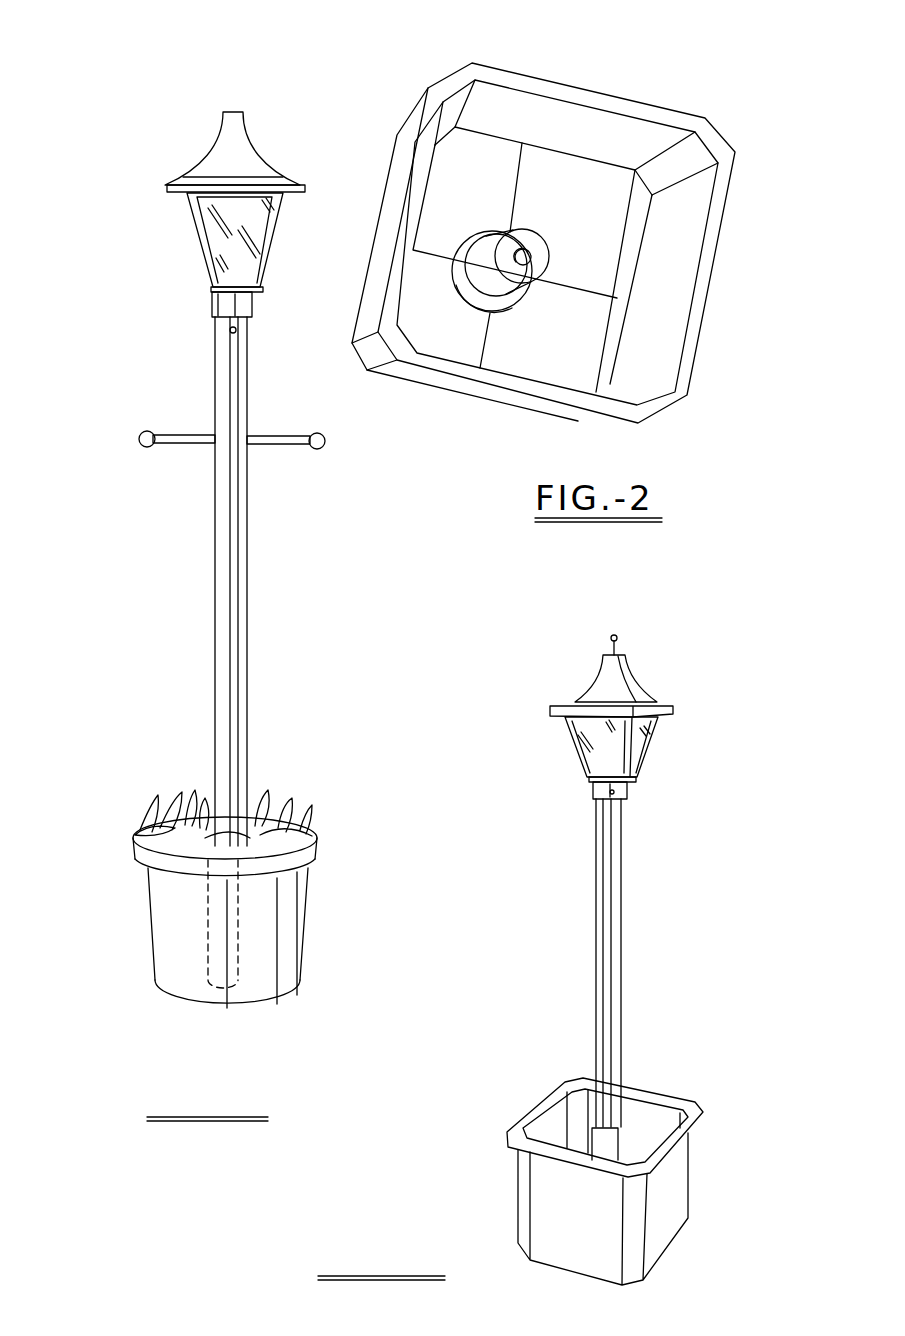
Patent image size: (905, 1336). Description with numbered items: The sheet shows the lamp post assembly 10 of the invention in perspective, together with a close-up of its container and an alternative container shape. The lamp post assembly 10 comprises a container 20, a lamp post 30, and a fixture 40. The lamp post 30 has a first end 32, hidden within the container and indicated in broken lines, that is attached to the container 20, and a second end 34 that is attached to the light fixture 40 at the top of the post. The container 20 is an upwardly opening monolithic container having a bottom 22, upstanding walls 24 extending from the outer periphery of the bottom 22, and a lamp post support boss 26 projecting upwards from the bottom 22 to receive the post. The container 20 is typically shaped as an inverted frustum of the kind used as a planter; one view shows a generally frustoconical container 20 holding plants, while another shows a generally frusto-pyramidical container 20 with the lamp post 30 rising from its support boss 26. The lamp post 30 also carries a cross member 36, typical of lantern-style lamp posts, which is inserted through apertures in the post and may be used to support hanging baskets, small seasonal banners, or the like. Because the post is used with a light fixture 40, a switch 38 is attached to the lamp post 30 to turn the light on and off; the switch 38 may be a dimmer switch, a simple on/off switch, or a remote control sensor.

In FIG. 1, the lamp post assembly 10 is at (262, 523).
In FIG. 3, the lamp post assembly 10 is at (586, 958).
In FIG. 1, the container 20 is at (145, 934).
In FIG. 2, the container 20 is at (672, 100).
In FIG. 3, the container 20 is at (534, 1098).
In FIG. 2, the bottom 22 is at (575, 315).
In FIG. 2, the upstanding walls 24 is at (567, 115).
In FIG. 2, the lamp post support boss 26 is at (520, 262).
In FIG. 1, the lamp post 30 is at (208, 552).
In FIG. 3, the lamp post 30 is at (628, 922).
In FIG. 1, the first end 32 is at (150, 982).
In FIG. 1, the second end 34 is at (215, 325).
In FIG. 3, the second end 34 is at (627, 802).
In FIG. 1, the cross member 36 is at (187, 434).
In FIG. 1, the switch 38 is at (229, 332).
In FIG. 1, the fixture 40 is at (197, 153).
In FIG. 3, the fixture 40 is at (646, 676).